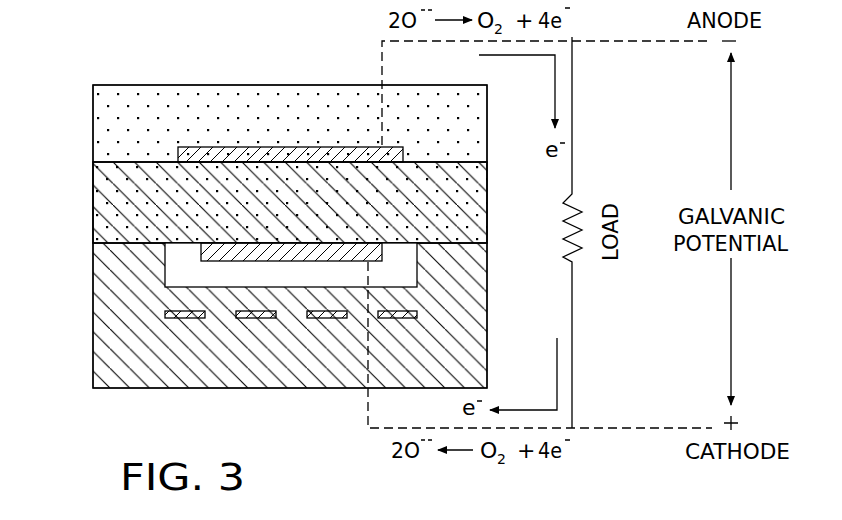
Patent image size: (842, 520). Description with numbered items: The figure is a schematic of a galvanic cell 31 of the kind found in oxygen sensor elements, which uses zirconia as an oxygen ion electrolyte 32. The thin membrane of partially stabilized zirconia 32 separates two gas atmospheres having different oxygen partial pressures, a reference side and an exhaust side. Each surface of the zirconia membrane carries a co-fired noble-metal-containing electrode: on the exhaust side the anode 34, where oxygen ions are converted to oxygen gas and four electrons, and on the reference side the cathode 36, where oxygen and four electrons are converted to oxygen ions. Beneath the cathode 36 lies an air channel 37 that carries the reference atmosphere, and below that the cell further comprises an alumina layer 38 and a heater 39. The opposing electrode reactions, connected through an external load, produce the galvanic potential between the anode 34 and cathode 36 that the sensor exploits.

The galvanic cell 31 is at (158, 37).
The zirconia oxygen ion electrolyte 32 is at (88, 187).
The anode 34 is at (183, 147).
The cathode 36 is at (200, 250).
The air channel 37 is at (200, 275).
The alumina layer 38 is at (266, 320).
The heater 39 is at (155, 378).